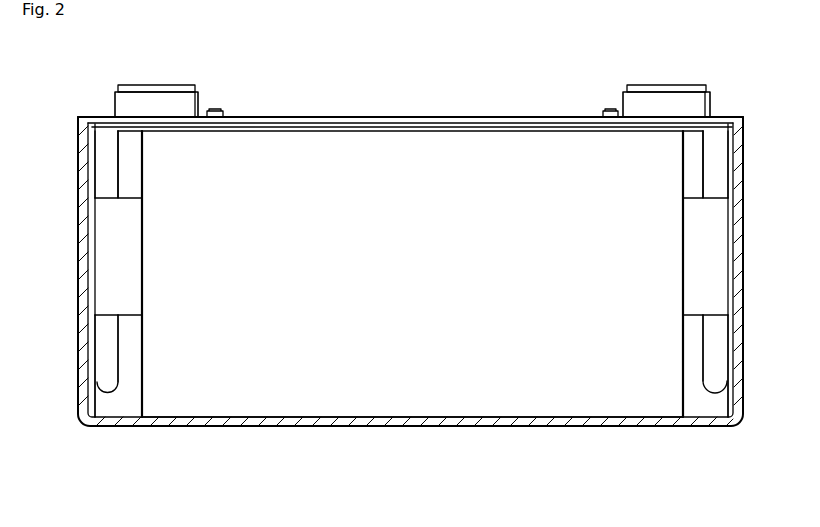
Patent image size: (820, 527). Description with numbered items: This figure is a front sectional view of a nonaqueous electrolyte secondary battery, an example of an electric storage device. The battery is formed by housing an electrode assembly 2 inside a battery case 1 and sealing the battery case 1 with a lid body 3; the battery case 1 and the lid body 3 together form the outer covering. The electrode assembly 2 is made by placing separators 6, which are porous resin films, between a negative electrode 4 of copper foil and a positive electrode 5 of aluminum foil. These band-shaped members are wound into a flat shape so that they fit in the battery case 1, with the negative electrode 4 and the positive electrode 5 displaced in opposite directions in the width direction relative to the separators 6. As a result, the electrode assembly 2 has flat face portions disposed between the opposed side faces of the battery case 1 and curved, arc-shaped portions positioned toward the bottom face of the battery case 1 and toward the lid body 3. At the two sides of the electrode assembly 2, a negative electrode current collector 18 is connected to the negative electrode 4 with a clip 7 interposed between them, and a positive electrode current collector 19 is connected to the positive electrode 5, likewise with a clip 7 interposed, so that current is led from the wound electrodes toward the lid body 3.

The battery case 1 is at (552, 427).
The electrode assembly 2 is at (338, 393).
The lid body 3 is at (407, 117).
The negative electrode 4 is at (132, 402).
The positive electrode 5 is at (693, 400).
The separators 6 is at (263, 400).
The clip 7 is at (105, 268).
The negative electrode current collector 18 is at (105, 162).
The positive electrode current collector 19 is at (720, 158).